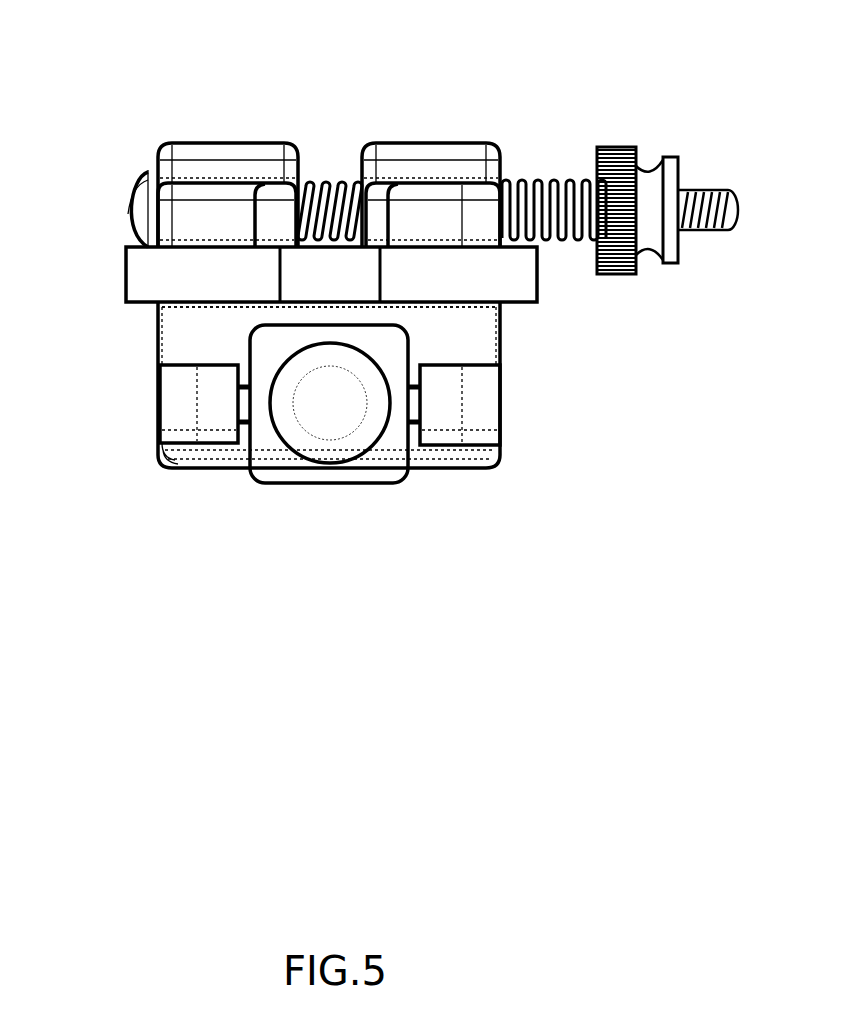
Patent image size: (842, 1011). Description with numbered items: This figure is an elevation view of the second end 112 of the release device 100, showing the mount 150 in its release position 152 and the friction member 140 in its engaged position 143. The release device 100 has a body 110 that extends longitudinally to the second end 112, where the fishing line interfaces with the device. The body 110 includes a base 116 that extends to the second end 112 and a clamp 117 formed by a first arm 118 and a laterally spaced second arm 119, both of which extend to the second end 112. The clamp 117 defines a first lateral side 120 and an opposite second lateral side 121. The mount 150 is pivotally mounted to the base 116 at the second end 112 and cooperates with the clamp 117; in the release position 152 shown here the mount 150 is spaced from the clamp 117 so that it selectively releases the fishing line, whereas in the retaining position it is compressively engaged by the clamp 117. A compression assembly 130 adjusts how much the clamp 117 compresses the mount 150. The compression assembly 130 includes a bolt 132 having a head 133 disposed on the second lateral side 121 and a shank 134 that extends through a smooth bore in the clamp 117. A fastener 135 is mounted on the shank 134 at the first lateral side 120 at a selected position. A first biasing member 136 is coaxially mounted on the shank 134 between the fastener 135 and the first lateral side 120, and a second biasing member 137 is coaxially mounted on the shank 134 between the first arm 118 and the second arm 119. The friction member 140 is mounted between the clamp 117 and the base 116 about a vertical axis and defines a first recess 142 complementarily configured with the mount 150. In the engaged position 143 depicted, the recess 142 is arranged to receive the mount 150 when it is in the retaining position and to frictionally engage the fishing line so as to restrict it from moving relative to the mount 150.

The release device 100 is at (63, 66).
The body 110 is at (154, 104).
The second end 112 is at (478, 395).
The base 116 is at (458, 462).
The clamp 117 is at (490, 148).
The first arm 118 is at (425, 142).
The second arm 119 is at (222, 143).
The first lateral side 120 is at (500, 175).
The second lateral side 121 is at (157, 165).
The compression assembly 130 is at (706, 144).
The bolt 132 is at (715, 190).
The head 133 is at (135, 222).
The shank 134 is at (303, 178).
The fastener 135 is at (655, 258).
The first biasing member 136 is at (570, 242).
The second biasing member 137 is at (333, 183).
The friction member 140 is at (114, 287).
The first recess 142 is at (380, 280).
The engaged position 143 is at (211, 319).
The mount 150 is at (282, 456).
The release position 152 is at (349, 469).